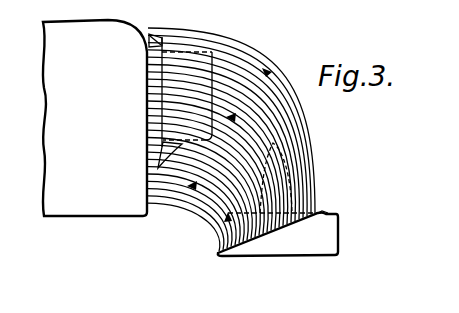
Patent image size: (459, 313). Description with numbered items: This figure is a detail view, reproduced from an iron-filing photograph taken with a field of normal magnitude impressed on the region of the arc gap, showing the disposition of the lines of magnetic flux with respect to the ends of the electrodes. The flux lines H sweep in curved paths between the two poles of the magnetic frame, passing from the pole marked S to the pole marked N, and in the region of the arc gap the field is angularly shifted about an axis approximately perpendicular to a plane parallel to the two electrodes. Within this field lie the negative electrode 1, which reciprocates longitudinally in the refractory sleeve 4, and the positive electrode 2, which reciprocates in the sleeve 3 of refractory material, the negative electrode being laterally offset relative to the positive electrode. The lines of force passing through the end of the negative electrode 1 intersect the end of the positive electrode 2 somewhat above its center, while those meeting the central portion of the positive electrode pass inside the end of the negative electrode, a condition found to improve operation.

The negative electrode 1 is at (293, 180).
The positive electrode 2 is at (160, 168).
The sleeve of refractory material 3 is at (146, 47).
The refractory sleeve 4 is at (318, 211).
The magnetic field lines H is at (297, 120).
The south pole S is at (95, 118).
The north pole N is at (278, 234).